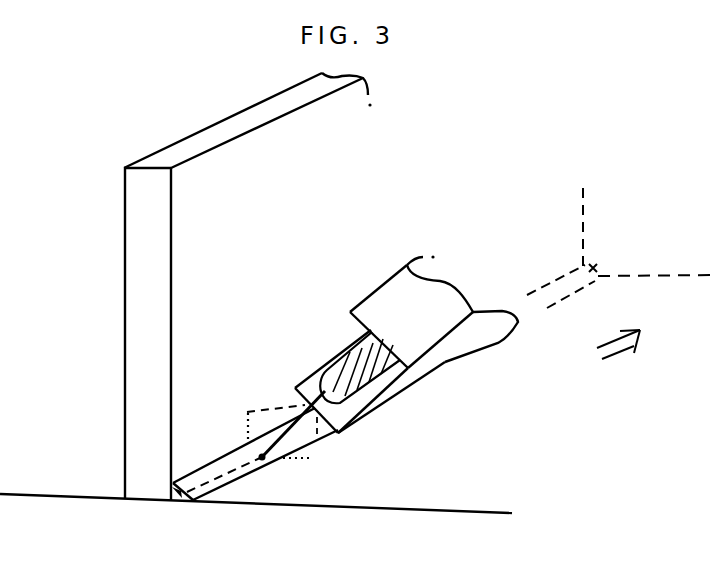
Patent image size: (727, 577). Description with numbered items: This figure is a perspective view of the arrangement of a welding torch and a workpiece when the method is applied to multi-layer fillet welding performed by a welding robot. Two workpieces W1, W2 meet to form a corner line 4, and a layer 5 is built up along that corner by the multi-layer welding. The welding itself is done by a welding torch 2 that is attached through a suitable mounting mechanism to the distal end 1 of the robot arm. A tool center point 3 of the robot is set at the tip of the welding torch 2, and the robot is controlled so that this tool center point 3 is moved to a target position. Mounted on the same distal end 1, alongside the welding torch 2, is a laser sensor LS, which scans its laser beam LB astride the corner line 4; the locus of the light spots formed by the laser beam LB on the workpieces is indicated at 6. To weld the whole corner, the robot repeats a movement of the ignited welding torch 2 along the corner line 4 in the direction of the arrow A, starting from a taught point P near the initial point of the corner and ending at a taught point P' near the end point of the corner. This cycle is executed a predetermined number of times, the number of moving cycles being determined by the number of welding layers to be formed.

The distal end of robot arm 1 is at (497, 333).
The welding torch 2 is at (344, 362).
The tool center point 3 is at (263, 458).
The corner line 4 is at (200, 488).
The layer 5 is at (244, 489).
The locus of light spots 6 is at (248, 430).
The workpiece W1 is at (402, 518).
The workpiece W2 is at (125, 238).
The laser beam LB is at (273, 411).
The laser sensor LS is at (405, 388).
The taught point P is at (168, 527).
The taught point P' is at (650, 232).
The arrow A is at (618, 368).